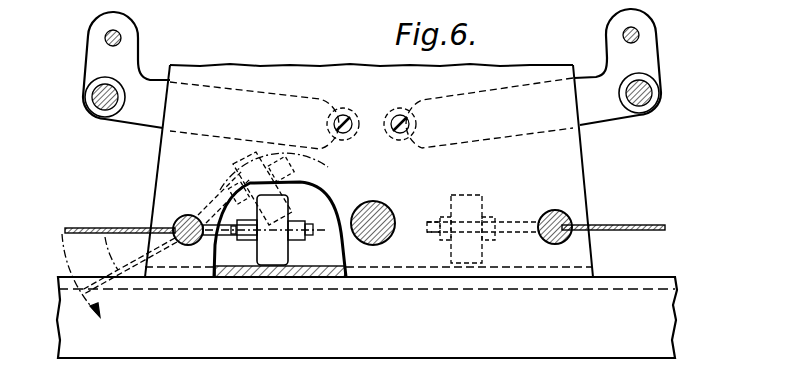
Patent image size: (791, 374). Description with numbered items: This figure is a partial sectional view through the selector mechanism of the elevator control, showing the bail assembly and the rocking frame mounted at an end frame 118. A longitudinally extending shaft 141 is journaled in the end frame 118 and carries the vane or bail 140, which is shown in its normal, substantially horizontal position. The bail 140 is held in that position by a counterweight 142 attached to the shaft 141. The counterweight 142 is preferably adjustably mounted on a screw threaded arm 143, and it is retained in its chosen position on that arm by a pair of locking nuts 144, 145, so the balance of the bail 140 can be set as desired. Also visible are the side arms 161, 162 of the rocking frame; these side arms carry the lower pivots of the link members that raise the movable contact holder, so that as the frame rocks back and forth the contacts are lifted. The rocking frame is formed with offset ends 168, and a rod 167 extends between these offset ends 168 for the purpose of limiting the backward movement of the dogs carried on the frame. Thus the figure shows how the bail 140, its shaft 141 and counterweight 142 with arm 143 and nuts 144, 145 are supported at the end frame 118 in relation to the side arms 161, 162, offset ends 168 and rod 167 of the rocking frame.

The end frame 118 is at (586, 196).
The vane or bail 140 is at (90, 229).
The shaft 141 is at (188, 214).
The counterweight 142 is at (289, 202).
The screw threaded arm 143 is at (323, 229).
The locking nut 144 is at (248, 213).
The locking nut 145 is at (297, 218).
The side arm 161 is at (149, 98).
The side arm 162 is at (591, 88).
The rod 167 is at (120, 40).
The offset end 168 is at (102, 62).